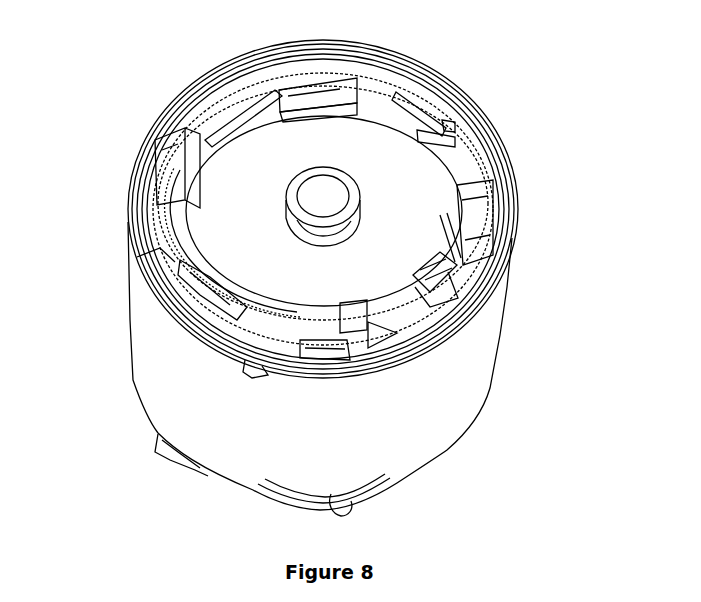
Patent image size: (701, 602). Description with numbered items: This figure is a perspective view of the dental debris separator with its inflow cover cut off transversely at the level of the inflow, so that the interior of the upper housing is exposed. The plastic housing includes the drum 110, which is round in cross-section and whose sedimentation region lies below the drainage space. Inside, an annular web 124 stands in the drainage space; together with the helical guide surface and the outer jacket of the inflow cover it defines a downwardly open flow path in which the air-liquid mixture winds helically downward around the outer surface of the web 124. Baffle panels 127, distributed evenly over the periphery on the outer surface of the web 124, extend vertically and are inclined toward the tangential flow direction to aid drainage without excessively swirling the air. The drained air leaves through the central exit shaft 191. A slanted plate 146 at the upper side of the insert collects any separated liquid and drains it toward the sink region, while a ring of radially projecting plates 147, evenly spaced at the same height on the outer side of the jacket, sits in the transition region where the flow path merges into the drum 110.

The drum 110 is at (480, 373).
The annular web 124 is at (243, 117).
The baffle panels 127 is at (180, 140).
The slanted plate 146 is at (408, 192).
The plates 147 is at (482, 225).
The central exit shaft 191 is at (331, 180).